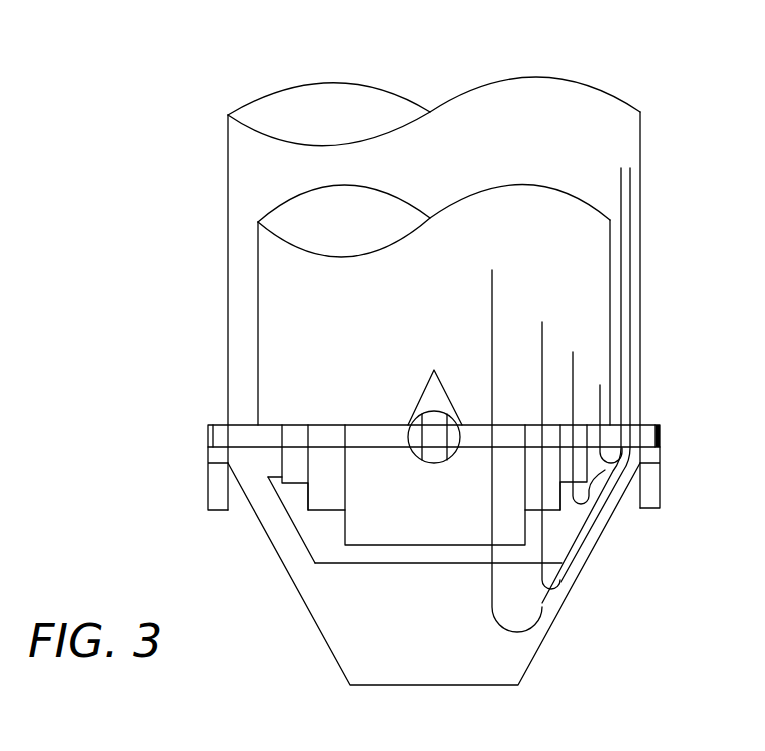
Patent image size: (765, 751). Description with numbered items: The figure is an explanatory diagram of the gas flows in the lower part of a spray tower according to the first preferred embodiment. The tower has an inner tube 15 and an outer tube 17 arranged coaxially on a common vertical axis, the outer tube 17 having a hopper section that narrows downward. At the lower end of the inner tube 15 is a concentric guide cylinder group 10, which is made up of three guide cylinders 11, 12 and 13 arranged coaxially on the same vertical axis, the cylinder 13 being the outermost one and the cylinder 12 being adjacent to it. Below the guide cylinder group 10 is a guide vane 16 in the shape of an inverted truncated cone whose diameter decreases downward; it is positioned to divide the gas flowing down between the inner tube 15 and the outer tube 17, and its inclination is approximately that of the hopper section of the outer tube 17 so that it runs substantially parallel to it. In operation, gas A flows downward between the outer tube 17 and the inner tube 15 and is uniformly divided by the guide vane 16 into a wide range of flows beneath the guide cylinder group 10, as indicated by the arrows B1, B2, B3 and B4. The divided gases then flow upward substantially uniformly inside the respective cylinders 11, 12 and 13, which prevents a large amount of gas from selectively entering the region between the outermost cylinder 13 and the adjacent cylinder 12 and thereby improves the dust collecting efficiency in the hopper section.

The guide cylinder group 10 is at (434, 391).
The guide cylinder 11 is at (434, 514).
The guide cylinder 12 is at (284, 536).
The guide cylinder 13 is at (408, 490).
The inner tube 15 is at (399, 292).
The guide vane 16 is at (438, 591).
The outer tube 17 is at (420, 268).
The gas A is at (586, 368).
The arrow B1 is at (605, 404).
The arrow B2 is at (581, 410).
The arrow B3 is at (546, 437).
The arrow B4 is at (510, 432).